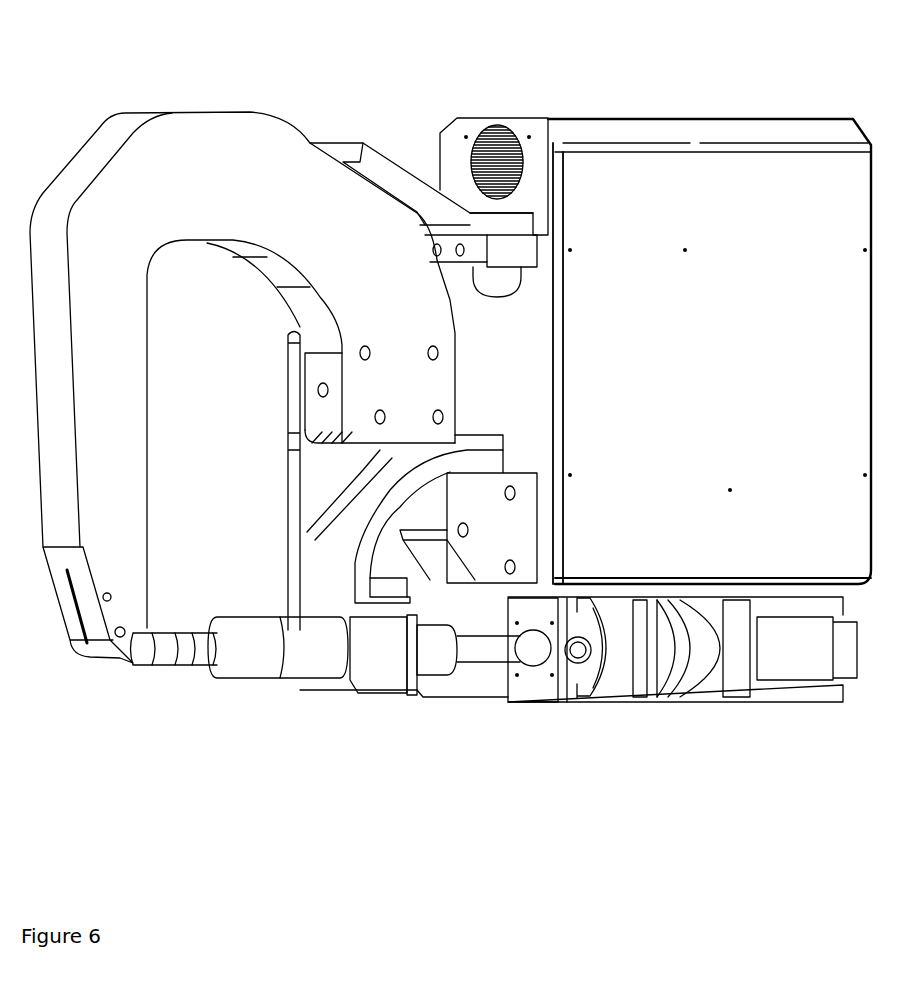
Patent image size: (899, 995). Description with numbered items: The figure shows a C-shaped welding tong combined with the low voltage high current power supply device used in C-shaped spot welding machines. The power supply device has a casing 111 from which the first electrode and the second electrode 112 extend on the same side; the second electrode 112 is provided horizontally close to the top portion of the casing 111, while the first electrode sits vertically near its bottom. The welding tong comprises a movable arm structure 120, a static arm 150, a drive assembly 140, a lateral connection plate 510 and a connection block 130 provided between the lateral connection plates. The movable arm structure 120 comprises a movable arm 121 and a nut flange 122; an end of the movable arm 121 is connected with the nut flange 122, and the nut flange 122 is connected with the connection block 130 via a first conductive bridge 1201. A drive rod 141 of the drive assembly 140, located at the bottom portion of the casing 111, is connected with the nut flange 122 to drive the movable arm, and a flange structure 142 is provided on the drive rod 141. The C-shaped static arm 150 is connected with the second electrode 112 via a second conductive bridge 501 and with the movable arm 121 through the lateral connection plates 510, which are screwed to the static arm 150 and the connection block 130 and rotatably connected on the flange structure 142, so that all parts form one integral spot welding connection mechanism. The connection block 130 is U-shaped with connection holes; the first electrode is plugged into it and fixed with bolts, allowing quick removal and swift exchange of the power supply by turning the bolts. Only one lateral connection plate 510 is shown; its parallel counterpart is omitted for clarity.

The casing 111 is at (812, 140).
The second electrode 112 is at (510, 245).
The second conductive bridge 501 is at (388, 160).
The static arm 150 is at (178, 132).
The lateral connection plate 510 is at (290, 472).
The first conductive bridge 1201 is at (365, 527).
The movable arm structure 120 is at (326, 736).
The movable arm 121 is at (297, 657).
The nut flange 122 is at (403, 660).
The connection block 130 is at (490, 540).
The drive assembly 140 is at (682, 740).
The drive rod 141 is at (517, 643).
The flange structure 142 is at (625, 655).